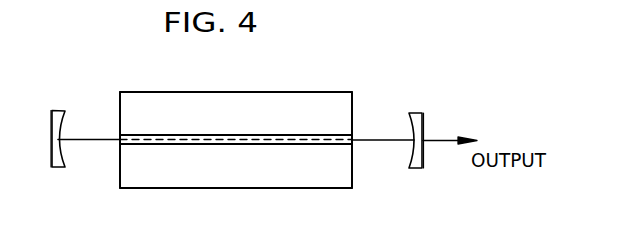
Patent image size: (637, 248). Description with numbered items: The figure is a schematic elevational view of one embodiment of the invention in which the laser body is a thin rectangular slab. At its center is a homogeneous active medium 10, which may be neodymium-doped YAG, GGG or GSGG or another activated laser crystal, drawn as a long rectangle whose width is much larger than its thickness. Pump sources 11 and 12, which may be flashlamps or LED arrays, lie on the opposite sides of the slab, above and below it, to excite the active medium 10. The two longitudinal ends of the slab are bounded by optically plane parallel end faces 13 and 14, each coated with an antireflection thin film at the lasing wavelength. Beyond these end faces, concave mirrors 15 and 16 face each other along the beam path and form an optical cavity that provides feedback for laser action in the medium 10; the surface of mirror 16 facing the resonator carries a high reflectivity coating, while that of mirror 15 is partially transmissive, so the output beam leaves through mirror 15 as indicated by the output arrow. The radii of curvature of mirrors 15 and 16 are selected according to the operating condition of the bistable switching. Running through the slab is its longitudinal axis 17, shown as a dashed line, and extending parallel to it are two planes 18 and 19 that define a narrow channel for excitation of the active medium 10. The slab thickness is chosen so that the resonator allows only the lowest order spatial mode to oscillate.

The active medium 10 is at (165, 136).
The pump source 11 is at (287, 103).
The pump source 12 is at (257, 182).
The end face 13 is at (352, 137).
The end face 14 is at (120, 135).
The mirror 15 is at (415, 169).
The mirror 16 is at (58, 168).
The longitudinal axis 17 is at (213, 141).
The plane 18 is at (245, 134).
The plane 19 is at (297, 146).